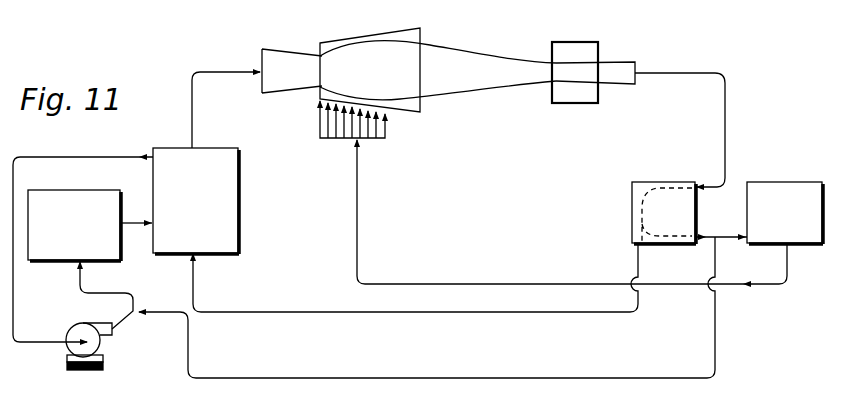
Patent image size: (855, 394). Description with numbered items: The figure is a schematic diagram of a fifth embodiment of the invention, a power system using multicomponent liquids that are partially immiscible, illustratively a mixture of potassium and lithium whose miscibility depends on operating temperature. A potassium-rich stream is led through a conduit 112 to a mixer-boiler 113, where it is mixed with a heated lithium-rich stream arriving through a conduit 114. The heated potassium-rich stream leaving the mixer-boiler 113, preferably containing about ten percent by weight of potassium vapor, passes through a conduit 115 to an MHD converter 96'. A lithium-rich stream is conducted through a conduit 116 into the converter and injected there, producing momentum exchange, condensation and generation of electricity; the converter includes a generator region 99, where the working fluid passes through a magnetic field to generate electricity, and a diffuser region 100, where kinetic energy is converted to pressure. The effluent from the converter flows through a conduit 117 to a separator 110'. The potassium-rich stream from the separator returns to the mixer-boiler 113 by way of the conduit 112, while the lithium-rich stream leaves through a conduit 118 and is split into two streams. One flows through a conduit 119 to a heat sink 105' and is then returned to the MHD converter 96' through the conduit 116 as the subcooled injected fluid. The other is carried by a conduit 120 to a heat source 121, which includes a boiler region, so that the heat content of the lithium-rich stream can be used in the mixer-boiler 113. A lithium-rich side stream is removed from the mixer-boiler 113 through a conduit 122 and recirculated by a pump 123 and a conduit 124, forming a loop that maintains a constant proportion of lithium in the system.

The MHD converter 96' is at (409, 76).
The generator region 99 is at (573, 69).
The diffuser region 100 is at (622, 68).
The heat sink 105' is at (785, 200).
The separator 110' is at (661, 198).
The conduit 112 is at (320, 312).
The mixer-boiler 113 is at (240, 237).
The conduit 114 is at (133, 225).
The conduit 115 is at (228, 70).
The conduit 116 is at (542, 284).
The conduit 117 is at (726, 131).
The conduit 118 is at (715, 237).
The conduit 119 is at (717, 238).
The conduit 120 is at (517, 378).
The heat source 121 is at (53, 189).
The conduit 122 is at (44, 157).
The pump 123 is at (72, 348).
The conduit 124 is at (136, 318).